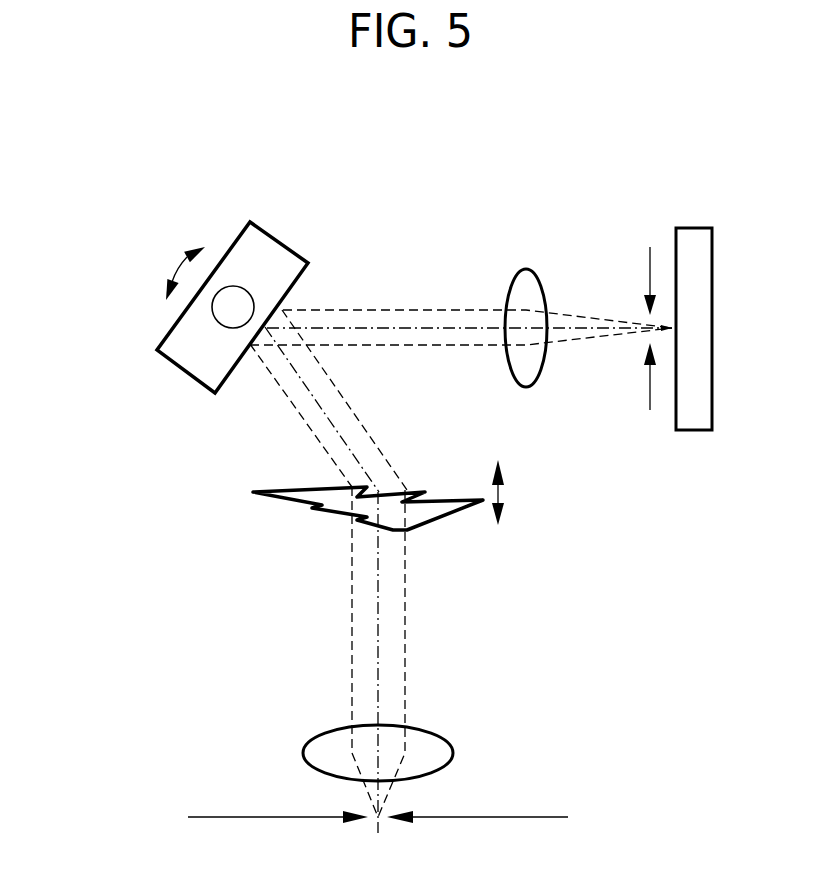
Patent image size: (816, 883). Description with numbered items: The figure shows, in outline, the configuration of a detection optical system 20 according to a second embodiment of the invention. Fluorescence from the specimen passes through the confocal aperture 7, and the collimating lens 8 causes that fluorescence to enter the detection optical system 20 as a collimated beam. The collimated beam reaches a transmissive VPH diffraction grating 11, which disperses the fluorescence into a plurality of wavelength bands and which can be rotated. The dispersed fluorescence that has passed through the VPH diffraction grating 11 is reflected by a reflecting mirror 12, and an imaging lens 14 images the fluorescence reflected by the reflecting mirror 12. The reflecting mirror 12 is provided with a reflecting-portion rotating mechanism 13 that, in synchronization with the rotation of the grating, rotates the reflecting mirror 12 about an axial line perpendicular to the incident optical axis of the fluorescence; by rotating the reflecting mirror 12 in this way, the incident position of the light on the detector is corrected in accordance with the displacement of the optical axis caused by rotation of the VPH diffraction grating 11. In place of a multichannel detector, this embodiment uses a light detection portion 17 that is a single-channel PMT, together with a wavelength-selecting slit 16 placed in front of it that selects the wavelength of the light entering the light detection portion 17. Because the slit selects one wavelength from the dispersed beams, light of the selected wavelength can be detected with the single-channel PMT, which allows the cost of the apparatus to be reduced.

The confocal aperture 7 is at (533, 815).
The collimating lens 8 is at (303, 752).
The transmissive VPH diffraction grating 11 is at (285, 498).
The reflecting mirror 12 is at (175, 324).
The reflecting-portion rotating mechanism 13 is at (233, 286).
The imaging lens 14 is at (526, 268).
The wavelength-selecting slit 16 is at (648, 263).
The light detection portion 17 is at (695, 228).
The detection optical system 20 is at (566, 613).